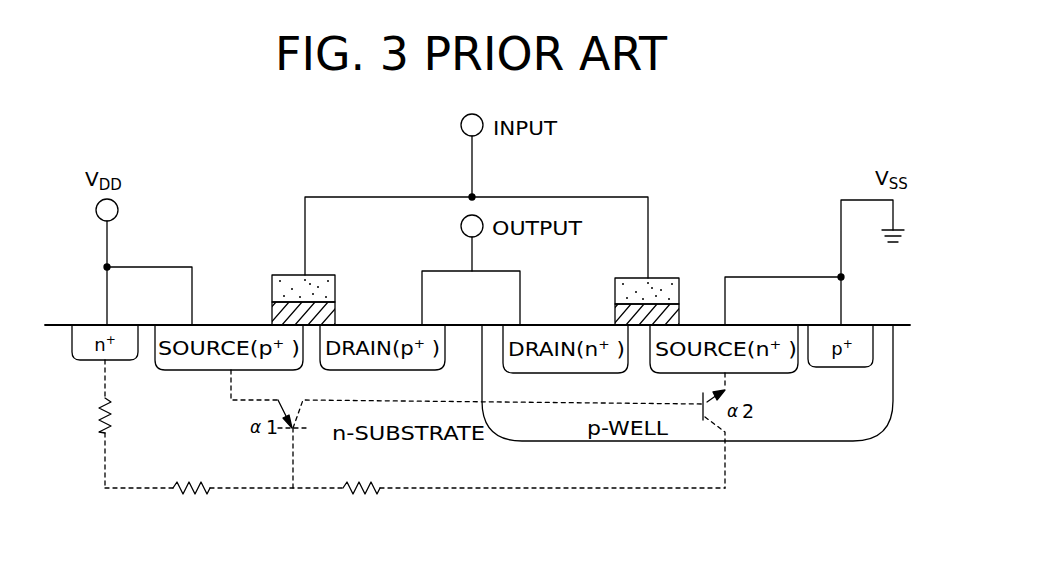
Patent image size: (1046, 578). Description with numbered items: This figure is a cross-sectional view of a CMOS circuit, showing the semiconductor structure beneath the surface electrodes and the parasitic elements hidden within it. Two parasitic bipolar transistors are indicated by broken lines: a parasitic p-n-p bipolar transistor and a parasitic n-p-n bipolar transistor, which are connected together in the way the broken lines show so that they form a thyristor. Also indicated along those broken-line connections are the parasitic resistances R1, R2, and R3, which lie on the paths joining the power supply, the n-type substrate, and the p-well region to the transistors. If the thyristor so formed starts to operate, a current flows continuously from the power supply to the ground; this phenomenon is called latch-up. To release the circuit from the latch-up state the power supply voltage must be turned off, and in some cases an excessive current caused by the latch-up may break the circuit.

The parasitic resistor R1 is at (119, 416).
The parasitic resistor R2 is at (191, 473).
The parasitic resistor R3 is at (361, 473).